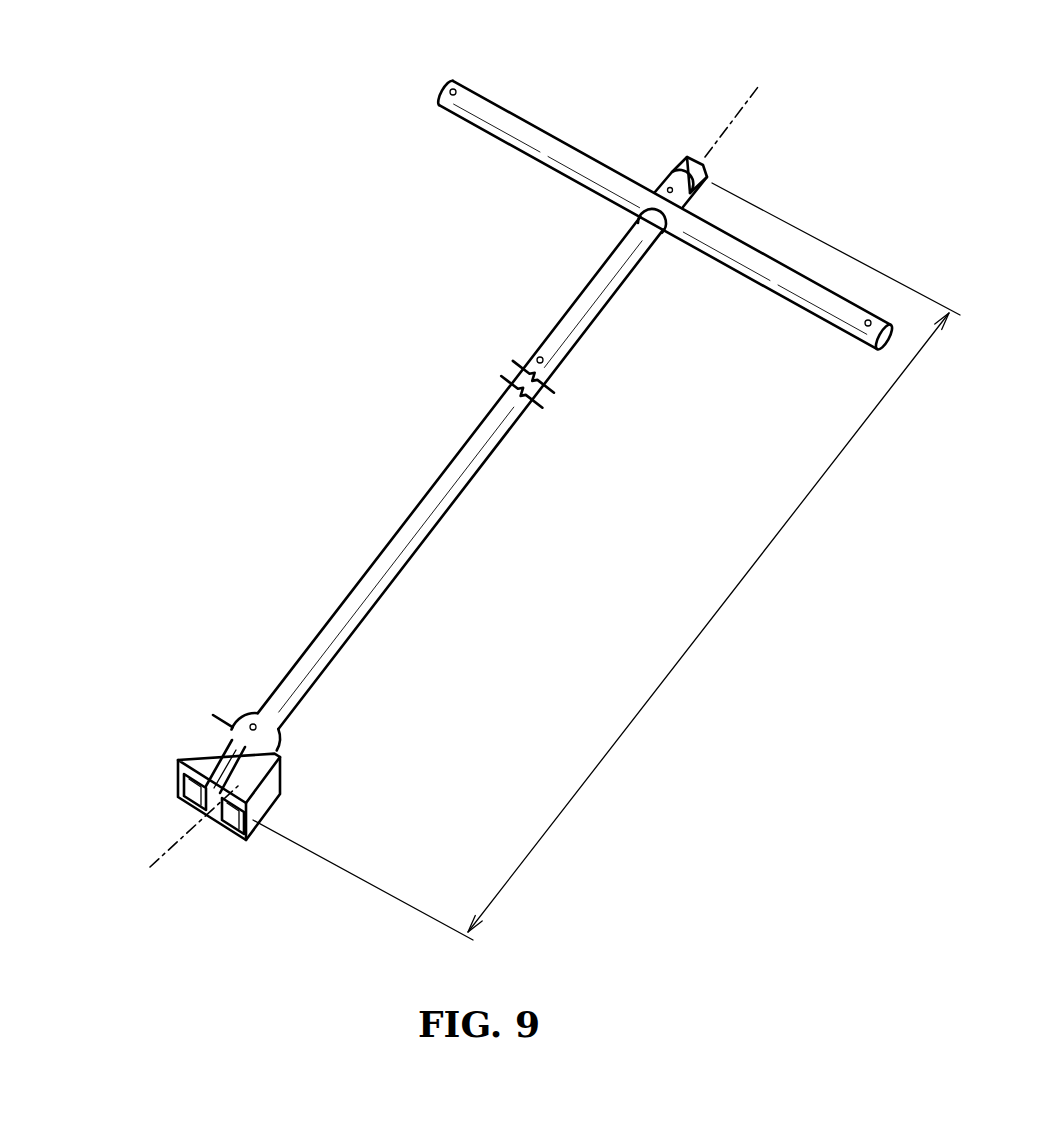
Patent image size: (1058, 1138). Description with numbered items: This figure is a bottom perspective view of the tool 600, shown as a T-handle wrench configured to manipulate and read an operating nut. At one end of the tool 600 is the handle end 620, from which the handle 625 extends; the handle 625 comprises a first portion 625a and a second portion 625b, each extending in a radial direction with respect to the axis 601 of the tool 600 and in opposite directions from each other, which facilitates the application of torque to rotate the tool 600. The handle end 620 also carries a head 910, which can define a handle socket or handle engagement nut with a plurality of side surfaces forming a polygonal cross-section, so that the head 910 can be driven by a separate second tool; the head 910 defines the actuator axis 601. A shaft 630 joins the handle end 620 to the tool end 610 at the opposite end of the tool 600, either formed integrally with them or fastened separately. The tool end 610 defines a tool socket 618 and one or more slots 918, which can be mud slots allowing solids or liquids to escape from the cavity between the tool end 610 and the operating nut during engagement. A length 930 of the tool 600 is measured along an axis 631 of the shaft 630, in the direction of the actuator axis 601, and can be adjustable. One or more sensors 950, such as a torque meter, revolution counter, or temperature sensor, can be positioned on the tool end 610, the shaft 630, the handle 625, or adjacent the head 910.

The tool 600 is at (272, 298).
The handle 625 is at (666, 193).
The first portion 625a is at (580, 162).
The second portion 625b is at (738, 244).
The head 910 is at (688, 152).
The axis of the shaft 631 is at (740, 112).
The sensors 950 is at (450, 92).
The handle end 620 is at (638, 238).
The shaft 630 is at (447, 492).
The length 930 is at (713, 622).
The slots 918 is at (222, 768).
The tool end 610 is at (246, 770).
The tool socket 618 is at (192, 796).
The actuator axis 601 is at (176, 840).